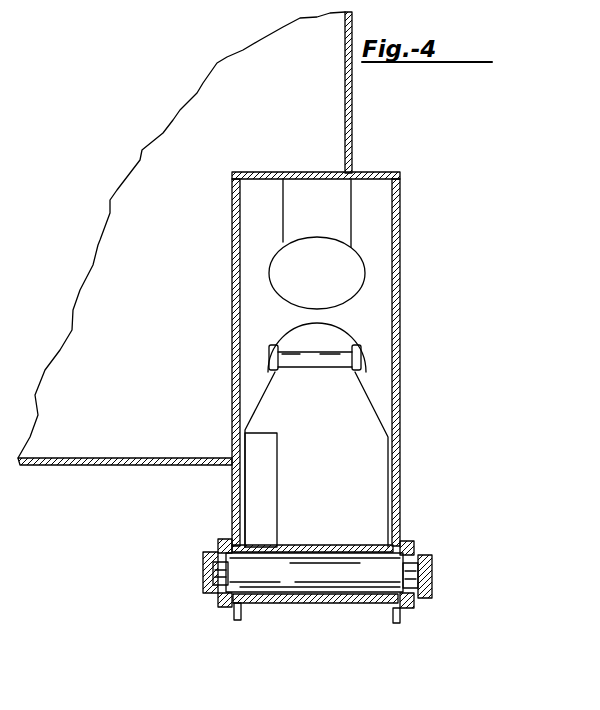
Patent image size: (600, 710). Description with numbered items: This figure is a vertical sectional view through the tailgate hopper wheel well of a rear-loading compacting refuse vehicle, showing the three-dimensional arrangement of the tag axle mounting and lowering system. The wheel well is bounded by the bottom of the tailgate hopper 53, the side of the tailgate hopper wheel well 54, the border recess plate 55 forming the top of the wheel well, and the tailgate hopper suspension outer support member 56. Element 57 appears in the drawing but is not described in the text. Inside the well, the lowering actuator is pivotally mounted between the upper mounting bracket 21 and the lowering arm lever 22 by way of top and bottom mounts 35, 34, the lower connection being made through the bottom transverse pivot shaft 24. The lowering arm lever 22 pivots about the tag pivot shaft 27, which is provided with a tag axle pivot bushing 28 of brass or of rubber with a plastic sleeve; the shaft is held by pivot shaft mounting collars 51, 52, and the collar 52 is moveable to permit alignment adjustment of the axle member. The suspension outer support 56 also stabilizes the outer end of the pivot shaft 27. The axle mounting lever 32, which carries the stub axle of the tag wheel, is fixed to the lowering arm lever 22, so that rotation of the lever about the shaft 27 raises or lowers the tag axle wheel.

The upper mounting bracket 21 is at (352, 215).
The lowering arm lever 22 is at (335, 450).
The bottom transverse pivot shaft 24 is at (337, 345).
The tag pivot shaft 27 is at (273, 582).
The tag axle pivot bushing 28 is at (243, 605).
The axle mounting lever 32 is at (253, 495).
The bottom mount 34 is at (280, 336).
The top mount 35 is at (363, 262).
The pivot shaft mounting collar 51 is at (405, 610).
The pivot shaft mounting collar 52 is at (432, 572).
The bottom of the tailgate hopper 53 is at (60, 462).
The side of the tailgate hopper wheel well 54 is at (233, 292).
The border recess plate 55 is at (260, 172).
The tailgate hopper suspension outer support member 56 is at (400, 202).
The vertical wall 57 is at (353, 137).